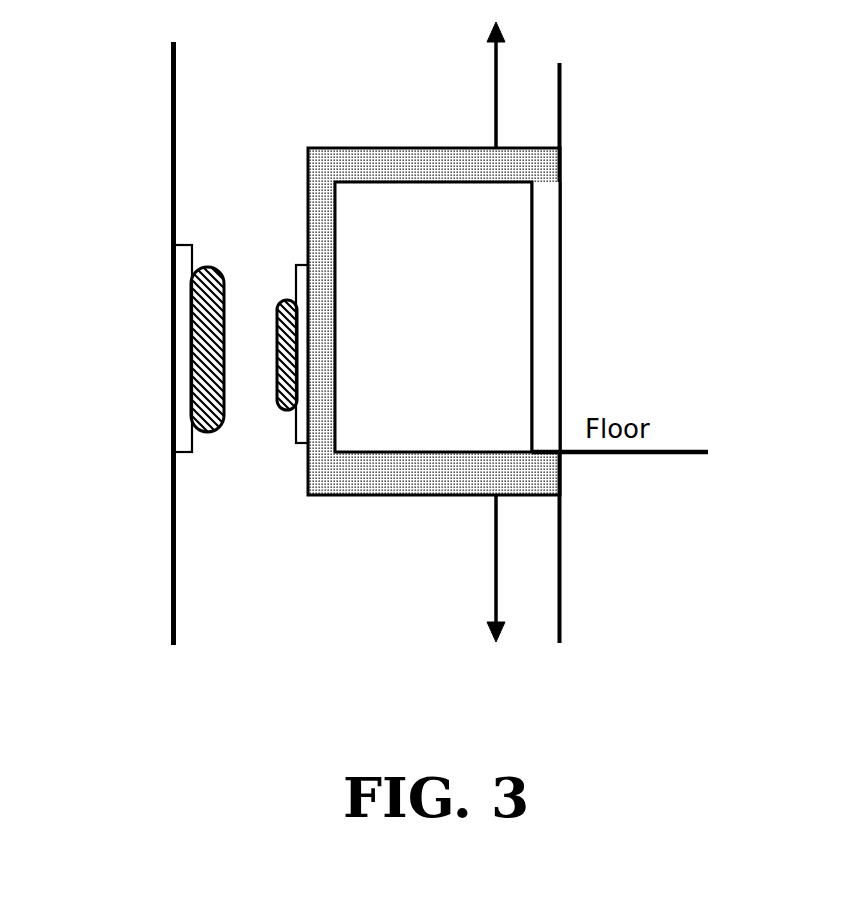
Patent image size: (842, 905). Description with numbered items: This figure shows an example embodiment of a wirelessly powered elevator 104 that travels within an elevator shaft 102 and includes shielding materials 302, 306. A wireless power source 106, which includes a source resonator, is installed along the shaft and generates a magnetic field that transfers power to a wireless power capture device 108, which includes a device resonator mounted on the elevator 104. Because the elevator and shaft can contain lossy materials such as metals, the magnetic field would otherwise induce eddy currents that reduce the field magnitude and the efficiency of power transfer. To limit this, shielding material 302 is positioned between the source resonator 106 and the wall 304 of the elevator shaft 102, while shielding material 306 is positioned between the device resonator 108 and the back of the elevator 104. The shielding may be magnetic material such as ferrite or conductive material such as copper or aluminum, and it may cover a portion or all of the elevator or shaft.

The elevator shaft 102 is at (198, 112).
The elevator 104 is at (530, 147).
The wireless power source 106 is at (192, 413).
The wireless power capture device 108 is at (277, 314).
The shielding material 302 is at (182, 297).
The wall 304 is at (173, 499).
The shielding material 306 is at (296, 428).